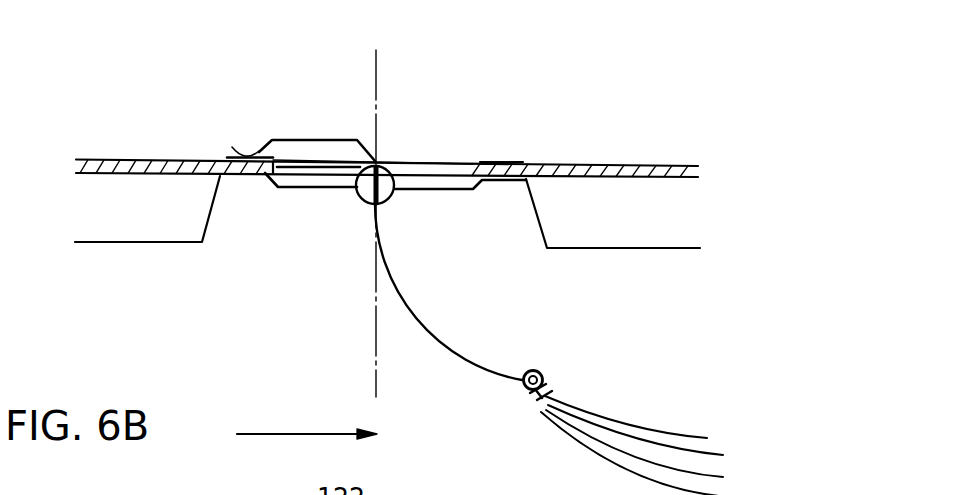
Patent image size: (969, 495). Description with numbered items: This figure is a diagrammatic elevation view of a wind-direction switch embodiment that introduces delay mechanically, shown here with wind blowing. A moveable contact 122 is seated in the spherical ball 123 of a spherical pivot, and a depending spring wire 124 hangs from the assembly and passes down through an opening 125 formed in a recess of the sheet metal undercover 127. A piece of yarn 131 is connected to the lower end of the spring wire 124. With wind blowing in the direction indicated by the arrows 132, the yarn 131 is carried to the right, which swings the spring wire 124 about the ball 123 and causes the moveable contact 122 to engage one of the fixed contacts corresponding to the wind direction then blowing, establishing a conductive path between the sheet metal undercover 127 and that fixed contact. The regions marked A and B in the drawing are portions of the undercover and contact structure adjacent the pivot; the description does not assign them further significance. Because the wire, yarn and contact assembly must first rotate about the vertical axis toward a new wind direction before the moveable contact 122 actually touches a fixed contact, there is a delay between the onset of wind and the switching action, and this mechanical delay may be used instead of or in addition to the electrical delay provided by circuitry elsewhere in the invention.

The moveable contact 122 is at (267, 140).
The spherical ball 123 is at (381, 165).
The spring wire 124 is at (427, 327).
The opening 125 is at (358, 198).
The sheet metal undercover 127 is at (120, 243).
The yarn 131 is at (647, 438).
The arrows 132 is at (307, 422).
The block A is at (588, 250).
The position B is at (498, 161).